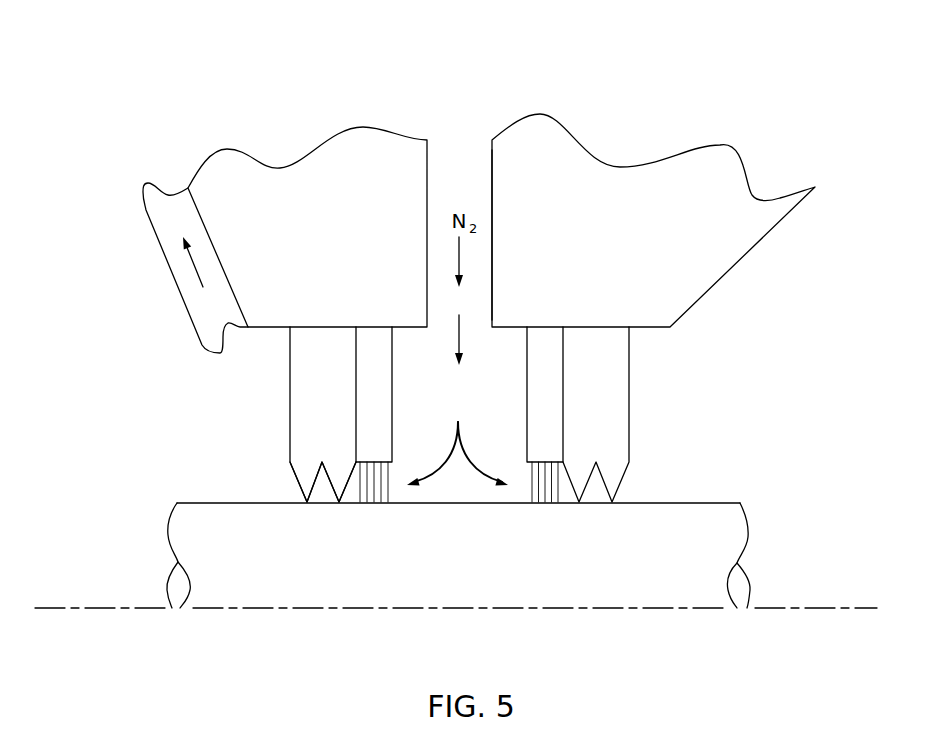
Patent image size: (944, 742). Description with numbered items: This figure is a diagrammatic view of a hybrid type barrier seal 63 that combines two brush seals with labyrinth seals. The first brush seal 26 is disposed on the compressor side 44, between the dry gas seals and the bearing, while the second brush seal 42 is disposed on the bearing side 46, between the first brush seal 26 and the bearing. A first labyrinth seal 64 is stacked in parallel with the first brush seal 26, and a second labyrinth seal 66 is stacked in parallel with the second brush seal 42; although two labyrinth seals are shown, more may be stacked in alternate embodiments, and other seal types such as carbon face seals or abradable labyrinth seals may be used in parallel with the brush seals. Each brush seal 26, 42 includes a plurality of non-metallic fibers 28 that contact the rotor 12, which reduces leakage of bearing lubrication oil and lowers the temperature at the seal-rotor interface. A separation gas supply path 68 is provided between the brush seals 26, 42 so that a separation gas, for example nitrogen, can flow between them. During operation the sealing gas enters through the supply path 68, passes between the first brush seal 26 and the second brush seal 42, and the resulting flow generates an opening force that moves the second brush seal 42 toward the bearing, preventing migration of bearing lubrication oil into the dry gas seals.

The rotor 12 is at (742, 520).
The first brush seal 26 is at (301, 256).
The non-metallic fibers 28 is at (388, 492).
The second brush seal 42 is at (580, 258).
The compressor side 44 is at (285, 414).
The bearing side 46 is at (622, 414).
The hybrid type barrier seal 63 is at (264, 459).
The first labyrinth seal 64 is at (295, 402).
The second labyrinth seal 66 is at (623, 390).
The separation gas supply path 68 is at (482, 196).